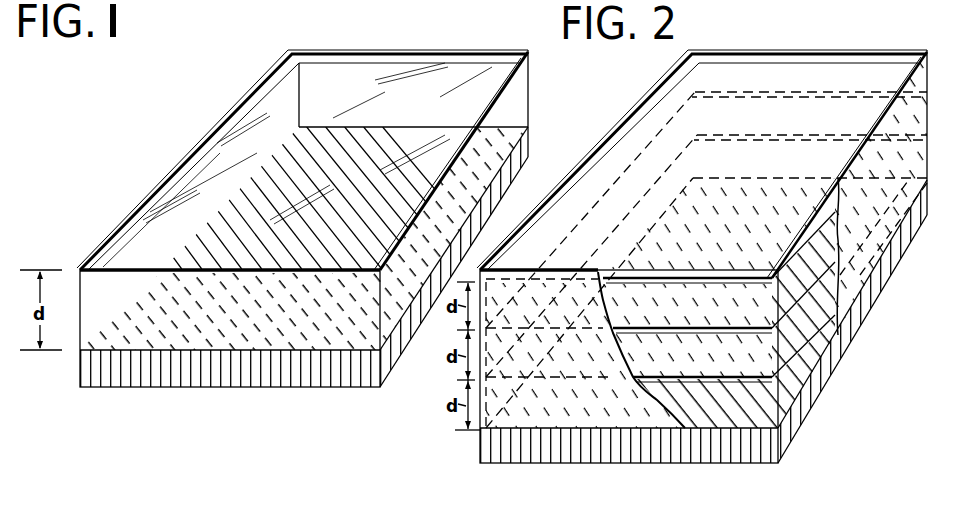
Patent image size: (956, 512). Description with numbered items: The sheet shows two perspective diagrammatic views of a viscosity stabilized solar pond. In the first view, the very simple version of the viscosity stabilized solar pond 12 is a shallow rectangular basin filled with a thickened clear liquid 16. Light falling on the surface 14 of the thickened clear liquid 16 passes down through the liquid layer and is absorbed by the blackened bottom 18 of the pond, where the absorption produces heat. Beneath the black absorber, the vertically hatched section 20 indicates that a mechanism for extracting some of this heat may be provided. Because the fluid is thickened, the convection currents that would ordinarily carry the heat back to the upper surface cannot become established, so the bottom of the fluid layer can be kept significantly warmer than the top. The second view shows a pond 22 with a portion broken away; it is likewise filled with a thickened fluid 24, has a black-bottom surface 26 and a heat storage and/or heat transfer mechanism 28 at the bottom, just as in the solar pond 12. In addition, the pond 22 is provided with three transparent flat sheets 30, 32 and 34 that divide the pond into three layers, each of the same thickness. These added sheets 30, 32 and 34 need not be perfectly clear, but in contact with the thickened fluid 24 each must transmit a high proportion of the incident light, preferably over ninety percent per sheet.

In FIG. 1, the viscosity stabilized solar pond 12 is at (190, 143).
In FIG. 1, the surface 14 is at (306, 86).
In FIG. 1, the thickened clear liquid 16 is at (259, 324).
In FIG. 1, the blackened bottom 18 is at (168, 349).
In FIG. 1, the vertically hatched section 20 is at (230, 374).
In FIG. 2, the pond 22 is at (815, 419).
In FIG. 2, the thickened fluid 24 is at (694, 317).
In FIG. 2, the black-bottom surface 26 is at (533, 405).
In FIG. 2, the heat storage and/or heat transfer mechanism 28 is at (672, 464).
In FIG. 2, the transparent flat sheet 30 is at (777, 368).
In FIG. 2, the transparent flat sheet 32 is at (790, 307).
In FIG. 2, the transparent flat sheet 34 is at (778, 270).